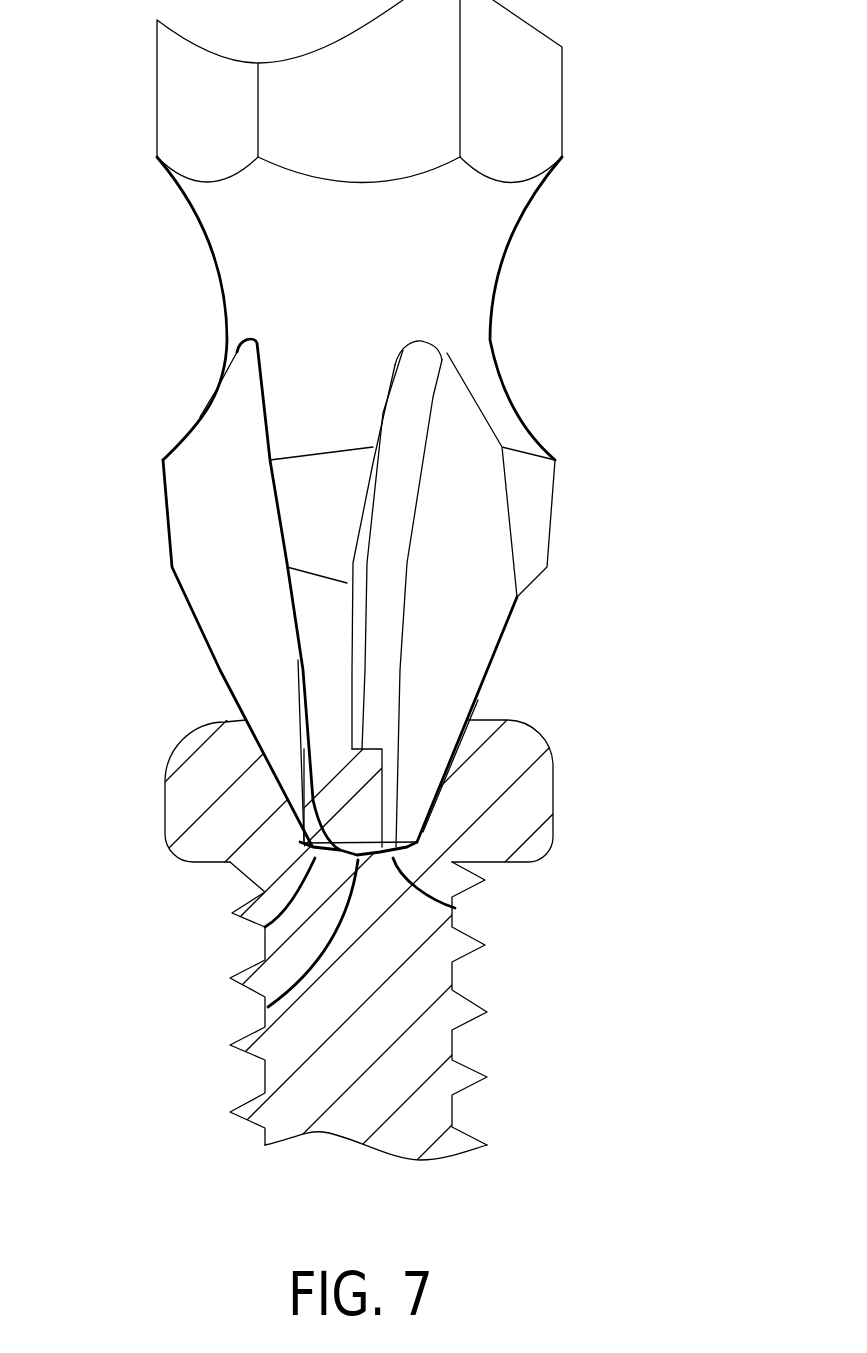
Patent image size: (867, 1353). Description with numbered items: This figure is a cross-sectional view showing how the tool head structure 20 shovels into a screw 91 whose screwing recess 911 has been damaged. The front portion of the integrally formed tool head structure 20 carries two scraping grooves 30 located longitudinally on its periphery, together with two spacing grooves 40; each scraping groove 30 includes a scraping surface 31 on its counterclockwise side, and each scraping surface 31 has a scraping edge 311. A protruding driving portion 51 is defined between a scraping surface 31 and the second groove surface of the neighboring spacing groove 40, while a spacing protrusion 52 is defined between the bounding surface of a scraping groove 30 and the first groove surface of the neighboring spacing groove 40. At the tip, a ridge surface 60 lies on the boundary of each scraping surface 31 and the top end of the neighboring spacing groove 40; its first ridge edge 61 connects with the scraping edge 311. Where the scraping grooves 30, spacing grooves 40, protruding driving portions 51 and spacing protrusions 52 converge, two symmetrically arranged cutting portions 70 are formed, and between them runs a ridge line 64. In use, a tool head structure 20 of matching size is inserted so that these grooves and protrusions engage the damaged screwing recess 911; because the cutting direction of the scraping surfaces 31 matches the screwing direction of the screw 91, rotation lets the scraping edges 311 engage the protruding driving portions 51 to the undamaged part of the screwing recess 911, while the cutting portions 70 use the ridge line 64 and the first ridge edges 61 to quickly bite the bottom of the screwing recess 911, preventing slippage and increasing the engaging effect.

The tool head structure 20 is at (553, 235).
The scraping groove 30 is at (457, 459).
The scraping surface 31 is at (475, 522).
The scraping edge 311 is at (490, 673).
The spacing groove 40 is at (223, 464).
The protruding driving portion 51 is at (530, 530).
The spacing protrusion 52 is at (308, 605).
The ridge surface 60 is at (358, 823).
The first ridge edge 61 is at (318, 825).
The ridge line 64 is at (267, 995).
The cutting portion 70 is at (265, 927).
The screw 91 is at (397, 1008).
The screwing recess 911 is at (455, 748).